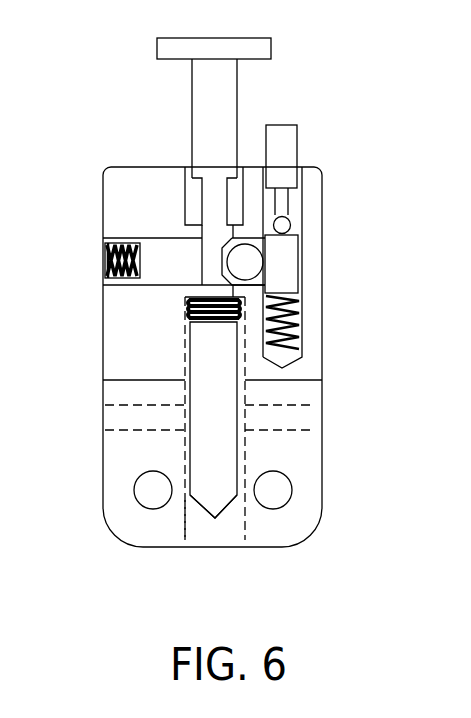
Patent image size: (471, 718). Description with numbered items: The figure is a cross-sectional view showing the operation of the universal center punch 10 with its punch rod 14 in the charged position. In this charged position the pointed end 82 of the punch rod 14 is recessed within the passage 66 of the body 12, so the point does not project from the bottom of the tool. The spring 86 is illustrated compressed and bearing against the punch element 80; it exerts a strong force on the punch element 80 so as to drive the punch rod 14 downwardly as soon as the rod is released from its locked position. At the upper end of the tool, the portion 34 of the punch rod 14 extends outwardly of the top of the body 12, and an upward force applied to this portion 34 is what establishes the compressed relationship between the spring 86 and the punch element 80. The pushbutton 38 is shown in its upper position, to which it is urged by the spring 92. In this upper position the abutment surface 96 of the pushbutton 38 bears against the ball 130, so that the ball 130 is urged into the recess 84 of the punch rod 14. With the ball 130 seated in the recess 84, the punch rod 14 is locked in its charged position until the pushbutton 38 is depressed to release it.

The universal center punch 10 is at (424, 63).
The body 12 is at (103, 192).
The punch rod 14 is at (200, 350).
The portion of the punch rod 34 is at (271, 49).
The pushbutton 38 is at (297, 140).
The passage 66 is at (185, 518).
The punch element 80 is at (200, 413).
The pointed end 82 is at (215, 518).
The recess 84 is at (195, 262).
The spring 86 is at (190, 312).
The spring 92 is at (302, 322).
The abutment surface 96 is at (300, 288).
The ball 130 is at (245, 262).